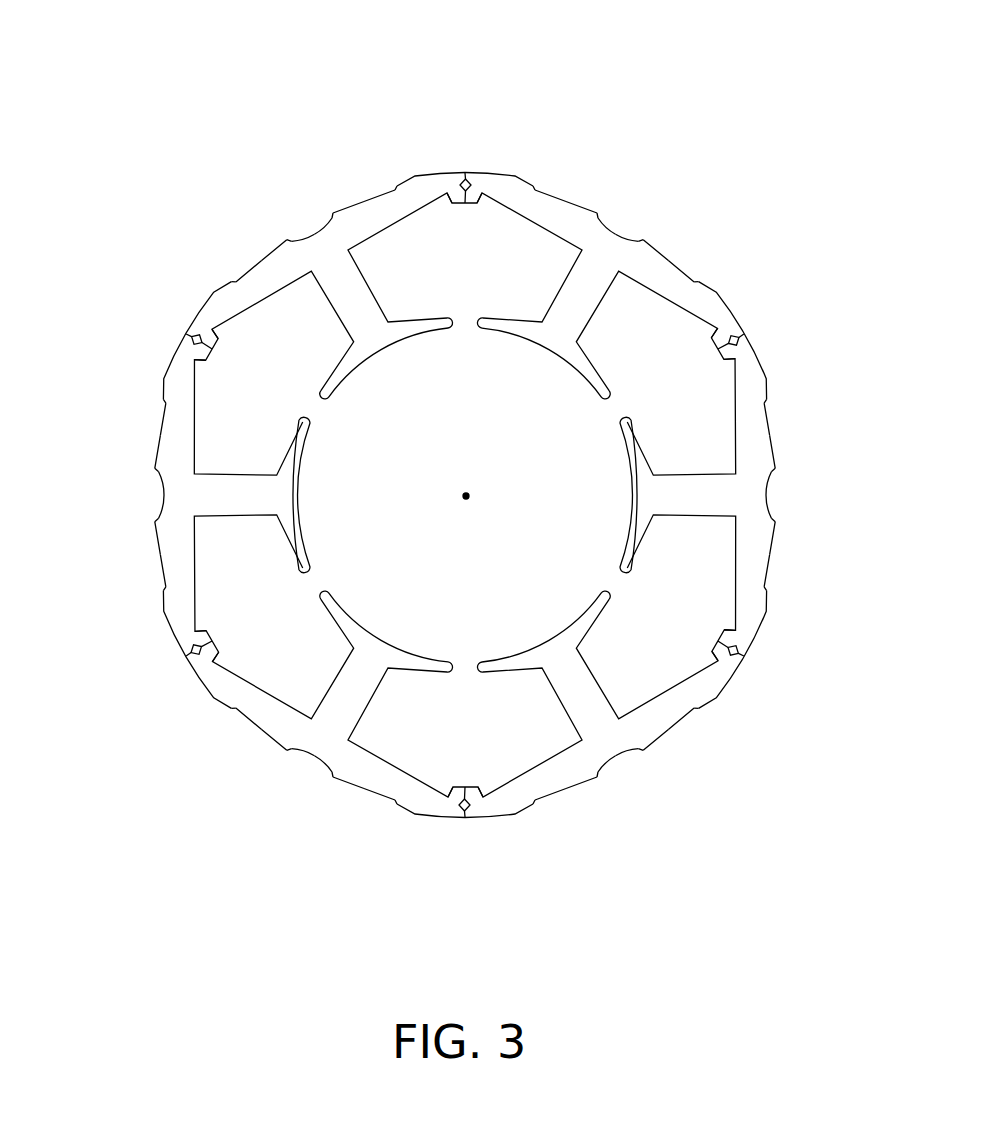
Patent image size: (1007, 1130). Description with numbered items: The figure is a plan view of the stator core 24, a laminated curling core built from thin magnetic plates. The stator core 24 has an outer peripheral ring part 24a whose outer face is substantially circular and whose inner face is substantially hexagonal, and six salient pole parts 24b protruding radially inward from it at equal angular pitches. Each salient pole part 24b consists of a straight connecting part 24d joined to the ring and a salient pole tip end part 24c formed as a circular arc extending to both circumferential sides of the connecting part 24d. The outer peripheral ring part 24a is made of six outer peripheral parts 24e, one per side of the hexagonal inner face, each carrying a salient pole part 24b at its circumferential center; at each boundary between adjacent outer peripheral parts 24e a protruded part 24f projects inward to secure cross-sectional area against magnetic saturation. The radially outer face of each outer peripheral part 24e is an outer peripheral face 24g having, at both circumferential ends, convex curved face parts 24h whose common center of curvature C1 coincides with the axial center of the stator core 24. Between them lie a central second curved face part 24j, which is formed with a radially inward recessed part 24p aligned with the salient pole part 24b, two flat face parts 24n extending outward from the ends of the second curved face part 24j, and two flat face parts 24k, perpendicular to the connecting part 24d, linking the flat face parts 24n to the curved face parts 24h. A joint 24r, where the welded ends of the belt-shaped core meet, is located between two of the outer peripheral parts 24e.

The stator core 24 is at (703, 134).
The outer peripheral ring part 24a is at (452, 164).
The salient pole part 24b is at (460, 258).
The salient pole tip end part 24c is at (408, 320).
The connecting part 24d is at (368, 278).
The outer peripheral part 24e is at (316, 232).
The recessed part 24p is at (465, 495).
The protruded part 24f is at (477, 206).
The outer peripheral face 24g is at (443, 172).
The curved face part 24h is at (445, 170).
The second curved face part 24j is at (360, 205).
The flat face part 24k is at (409, 178).
The flat face part 24n is at (392, 187).
The joint 24r is at (473, 180).
The center of curvature C1 is at (466, 494).